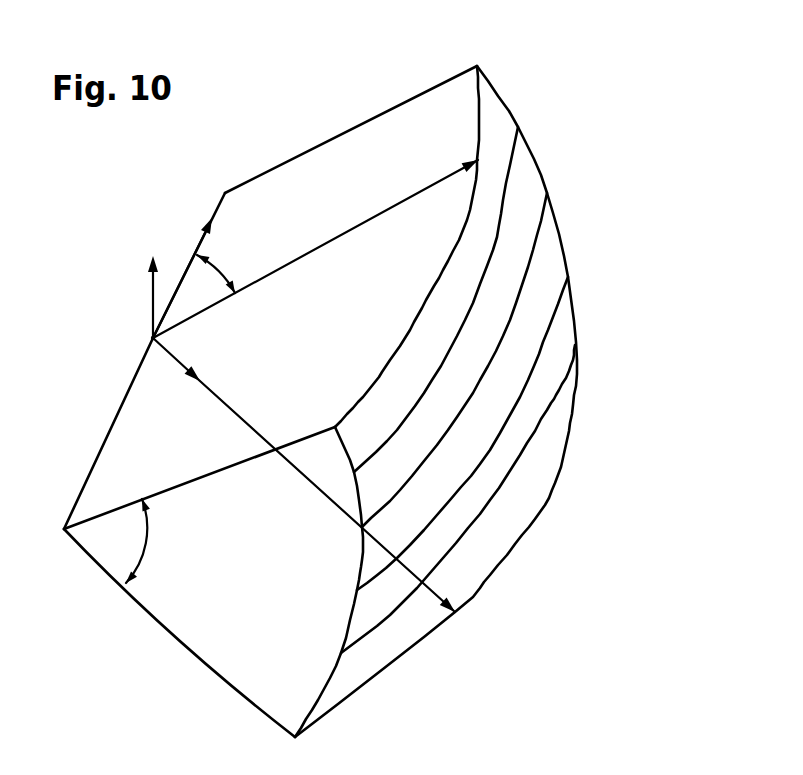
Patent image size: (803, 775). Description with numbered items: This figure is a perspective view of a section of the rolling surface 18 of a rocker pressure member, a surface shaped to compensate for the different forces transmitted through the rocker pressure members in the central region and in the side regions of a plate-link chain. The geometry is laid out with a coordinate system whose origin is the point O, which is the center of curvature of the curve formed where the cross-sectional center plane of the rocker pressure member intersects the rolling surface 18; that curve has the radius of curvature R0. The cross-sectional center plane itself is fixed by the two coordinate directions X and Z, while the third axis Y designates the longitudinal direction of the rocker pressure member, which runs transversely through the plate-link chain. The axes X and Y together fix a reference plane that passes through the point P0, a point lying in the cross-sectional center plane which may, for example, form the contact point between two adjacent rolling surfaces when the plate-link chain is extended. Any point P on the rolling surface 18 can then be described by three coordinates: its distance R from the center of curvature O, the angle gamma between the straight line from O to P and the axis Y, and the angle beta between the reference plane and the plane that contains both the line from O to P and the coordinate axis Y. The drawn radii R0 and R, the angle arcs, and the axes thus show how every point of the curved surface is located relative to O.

The rolling surface 18 is at (552, 258).
The coordinate direction Z is at (137, 297).
The longitudinal direction Y is at (182, 272).
The coordinate direction X is at (176, 373).
The center of curvature O is at (137, 342).
The radius of curvature R0 is at (322, 492).
The reference point P0 is at (466, 621).
The distance R is at (315, 249).
The point on rolling surface P is at (483, 149).